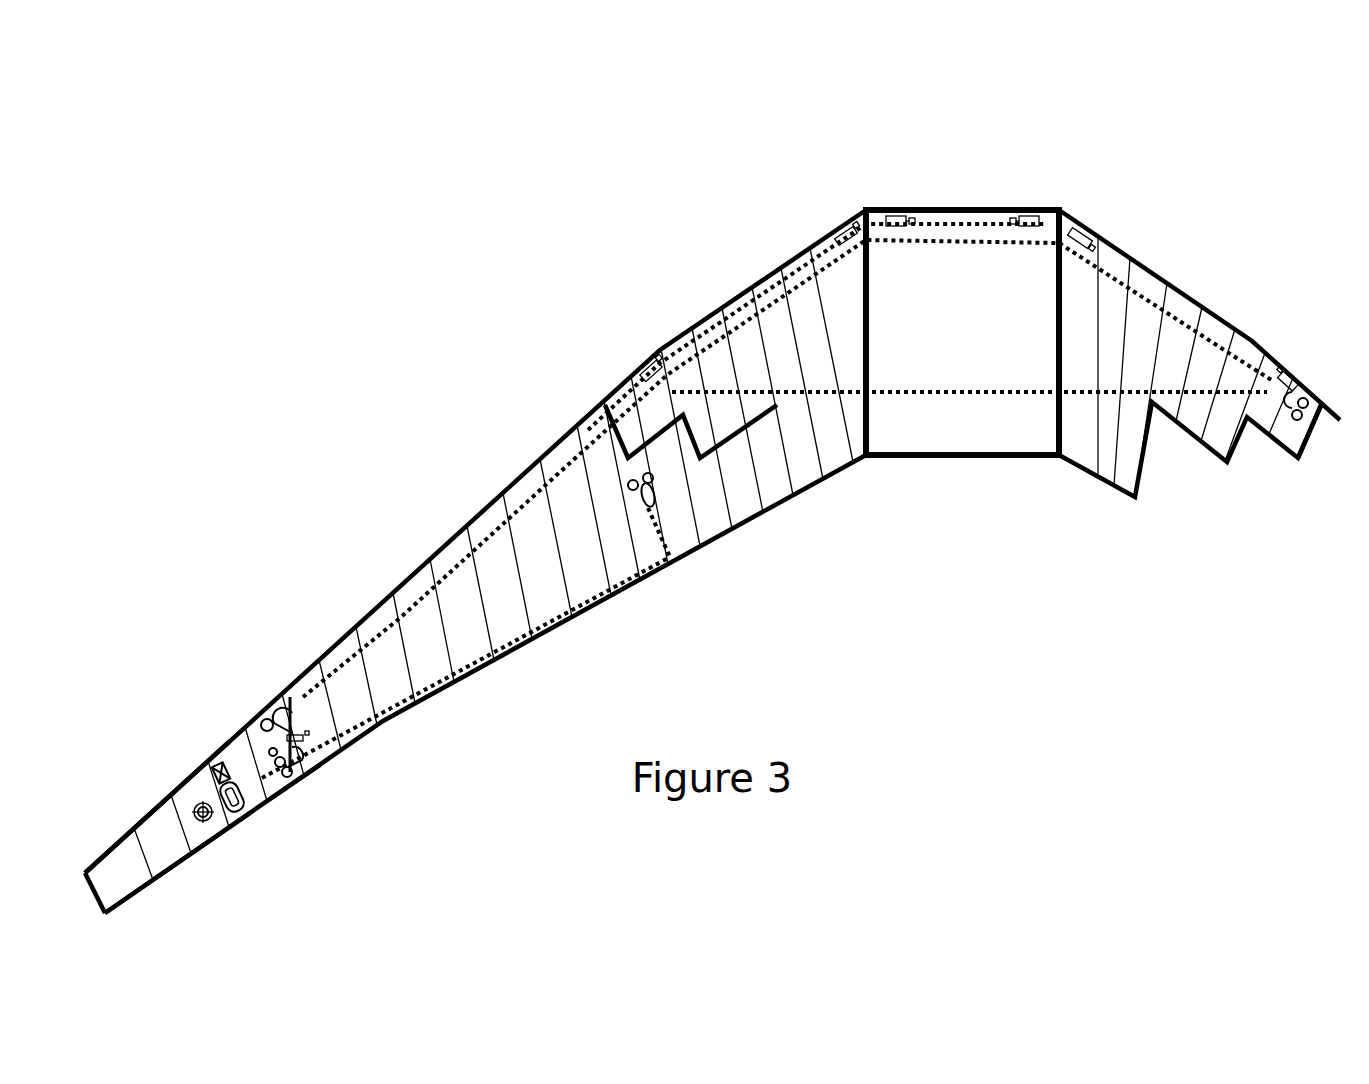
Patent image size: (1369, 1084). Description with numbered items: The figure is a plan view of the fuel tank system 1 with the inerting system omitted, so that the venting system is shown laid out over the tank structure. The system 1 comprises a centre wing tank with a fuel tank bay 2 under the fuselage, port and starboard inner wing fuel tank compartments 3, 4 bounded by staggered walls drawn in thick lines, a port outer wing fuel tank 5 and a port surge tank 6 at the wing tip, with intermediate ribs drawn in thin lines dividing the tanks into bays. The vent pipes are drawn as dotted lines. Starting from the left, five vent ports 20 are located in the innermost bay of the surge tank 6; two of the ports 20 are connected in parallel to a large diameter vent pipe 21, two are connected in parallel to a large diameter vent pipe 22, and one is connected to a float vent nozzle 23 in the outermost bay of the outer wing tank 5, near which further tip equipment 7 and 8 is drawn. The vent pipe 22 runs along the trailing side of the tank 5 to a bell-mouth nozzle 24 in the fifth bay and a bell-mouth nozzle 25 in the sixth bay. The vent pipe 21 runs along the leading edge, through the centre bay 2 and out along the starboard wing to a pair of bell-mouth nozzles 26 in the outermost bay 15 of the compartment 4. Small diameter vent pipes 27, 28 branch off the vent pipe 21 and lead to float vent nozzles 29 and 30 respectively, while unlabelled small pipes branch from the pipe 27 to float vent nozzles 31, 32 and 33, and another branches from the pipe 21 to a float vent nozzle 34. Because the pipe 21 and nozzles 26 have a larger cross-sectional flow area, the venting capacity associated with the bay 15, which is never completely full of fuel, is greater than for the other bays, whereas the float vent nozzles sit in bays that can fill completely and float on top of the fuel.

The fuel tank system 1 is at (712, 561).
The fuel tank bay 2 is at (962, 332).
The port inner wing fuel tank compartment 3 is at (852, 488).
The starboard inner wing fuel tank compartment 4 is at (1107, 517).
The port outer wing fuel tank 5 is at (420, 533).
The port surge tank 6 is at (172, 763).
The wing tip sensor 7 is at (210, 820).
The wing tip actuator unit 8 is at (245, 800).
The outermost bay 15 is at (1298, 458).
The vent ports 20 is at (297, 785).
The large diameter vent pipe 21 is at (475, 545).
The large diameter vent pipe 22 is at (470, 672).
The float vent nozzle 23 is at (290, 700).
The bell-mouth nozzle 24 is at (652, 481).
The bell-mouth nozzle 25 is at (629, 483).
The bell-mouth nozzles 26 is at (1288, 428).
The small diameter vent pipe 27 is at (950, 222).
The small diameter vent pipe 28 is at (948, 400).
The float vent nozzle 29 is at (1030, 215).
The float vent nozzle 30 is at (1287, 375).
The float vent nozzle 31 is at (845, 230).
The float vent nozzle 32 is at (895, 213).
The float vent nozzle 33 is at (642, 367).
The float vent nozzle 34 is at (1082, 228).